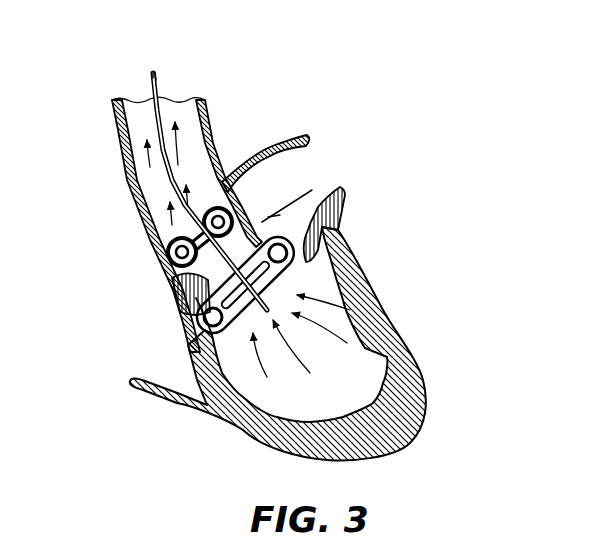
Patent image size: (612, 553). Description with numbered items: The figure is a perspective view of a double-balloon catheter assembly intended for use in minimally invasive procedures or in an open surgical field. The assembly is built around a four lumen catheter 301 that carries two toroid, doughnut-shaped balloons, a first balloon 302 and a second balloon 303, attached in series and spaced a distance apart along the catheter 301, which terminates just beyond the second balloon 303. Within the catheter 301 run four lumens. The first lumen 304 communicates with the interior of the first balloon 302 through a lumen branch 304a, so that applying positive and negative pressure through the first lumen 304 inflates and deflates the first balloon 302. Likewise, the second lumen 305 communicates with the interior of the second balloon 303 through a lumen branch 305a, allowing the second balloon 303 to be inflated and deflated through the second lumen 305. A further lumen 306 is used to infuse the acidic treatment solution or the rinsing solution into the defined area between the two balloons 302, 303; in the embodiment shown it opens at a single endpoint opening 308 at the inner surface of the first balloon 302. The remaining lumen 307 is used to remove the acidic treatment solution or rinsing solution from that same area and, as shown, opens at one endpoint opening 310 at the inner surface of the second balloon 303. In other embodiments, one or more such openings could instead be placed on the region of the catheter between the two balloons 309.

The four lumen catheter 301 is at (153, 118).
The first balloon 302 is at (150, 242).
The second balloon 303 is at (197, 343).
The first lumen 304 is at (152, 72).
The lumen branch 304a is at (222, 168).
The second lumen 305 is at (153, 72).
The lumen branch 305a is at (312, 190).
The lumen 306 is at (157, 72).
The lumen 307 is at (157, 72).
The endpoint opening 308 is at (268, 217).
The region of the catheter between the two balloons 309 is at (200, 277).
The endpoint opening 310 is at (197, 317).